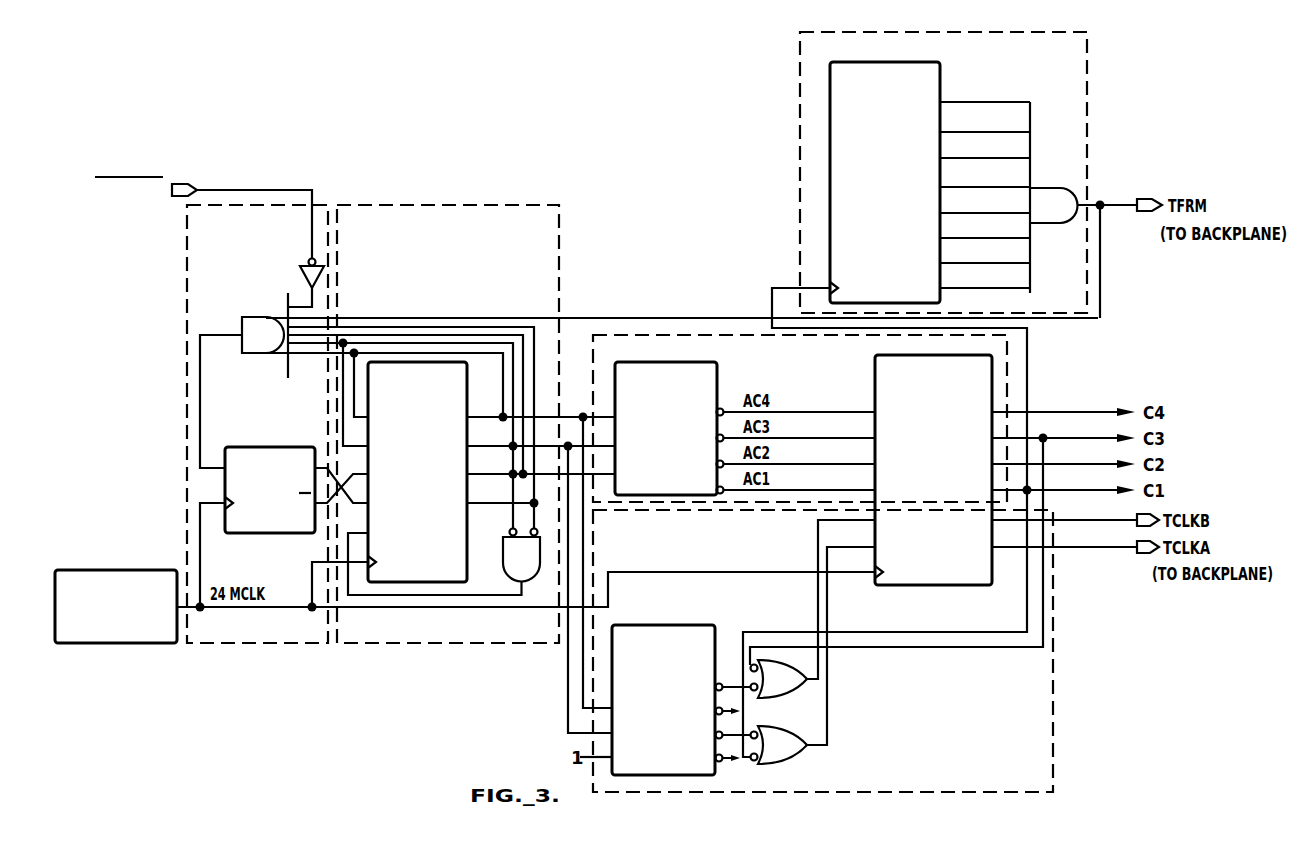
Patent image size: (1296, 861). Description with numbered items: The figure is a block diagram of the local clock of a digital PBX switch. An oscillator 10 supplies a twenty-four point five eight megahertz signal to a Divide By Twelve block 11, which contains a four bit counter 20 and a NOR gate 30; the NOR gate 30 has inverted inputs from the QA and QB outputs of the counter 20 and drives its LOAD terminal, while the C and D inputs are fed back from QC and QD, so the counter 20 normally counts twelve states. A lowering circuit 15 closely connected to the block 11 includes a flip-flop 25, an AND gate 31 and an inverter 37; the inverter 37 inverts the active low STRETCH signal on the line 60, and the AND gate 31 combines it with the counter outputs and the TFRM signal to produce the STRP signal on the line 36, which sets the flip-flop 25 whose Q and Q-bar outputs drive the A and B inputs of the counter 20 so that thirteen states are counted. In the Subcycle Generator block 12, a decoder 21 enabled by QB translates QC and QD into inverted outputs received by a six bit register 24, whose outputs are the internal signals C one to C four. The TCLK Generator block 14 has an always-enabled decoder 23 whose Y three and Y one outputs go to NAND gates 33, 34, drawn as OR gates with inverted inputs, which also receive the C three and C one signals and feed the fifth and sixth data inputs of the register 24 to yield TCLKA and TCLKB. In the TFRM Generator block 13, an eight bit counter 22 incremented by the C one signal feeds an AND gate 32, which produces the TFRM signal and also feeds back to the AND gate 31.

The oscillator 10 is at (128, 570).
The Divide By 12 block 11 is at (523, 638).
The Subcycle Generator block 12 is at (845, 362).
The TFRM Generator block 13 is at (1075, 301).
The TCLK Generator block 14 is at (850, 786).
The lowering circuit 15 is at (210, 635).
The four bit counter 20 is at (457, 542).
The decoder 21 is at (642, 362).
The 8-bit counter 22 is at (940, 80).
The decoder 23 is at (690, 625).
The six bit register 24 is at (952, 585).
The flip-flop 25 is at (284, 447).
The NOR gate 30 is at (509, 573).
The AND gate 31 is at (258, 317).
The AND gate 32 is at (1045, 188).
The NAND gate 33 is at (777, 698).
The NAND gate 34 is at (779, 763).
The line 36 is at (200, 424).
The inverter 37 is at (304, 279).
The line 60 is at (205, 190).